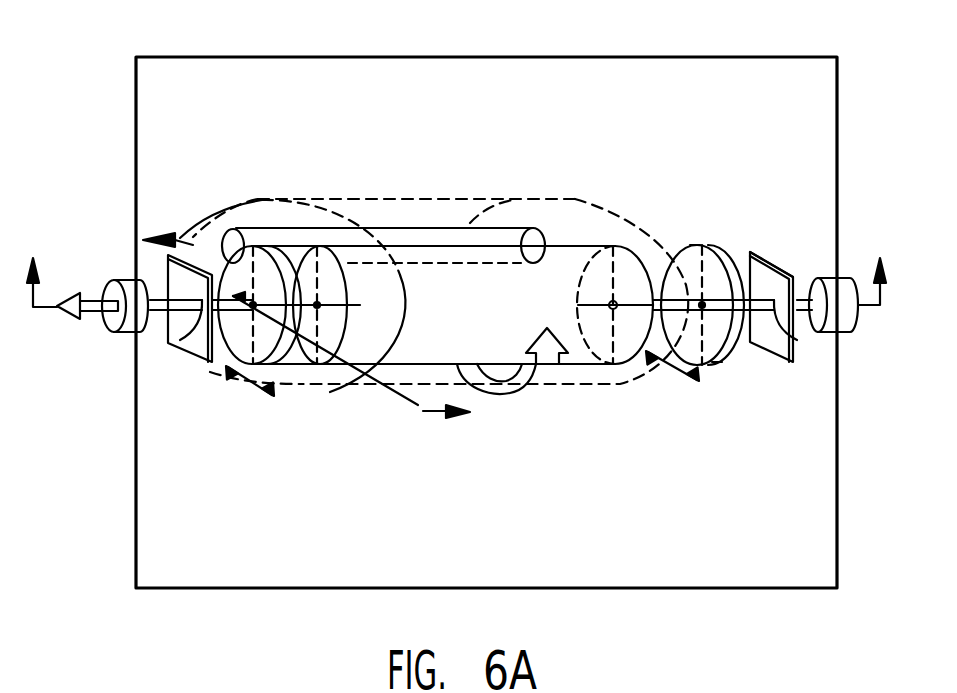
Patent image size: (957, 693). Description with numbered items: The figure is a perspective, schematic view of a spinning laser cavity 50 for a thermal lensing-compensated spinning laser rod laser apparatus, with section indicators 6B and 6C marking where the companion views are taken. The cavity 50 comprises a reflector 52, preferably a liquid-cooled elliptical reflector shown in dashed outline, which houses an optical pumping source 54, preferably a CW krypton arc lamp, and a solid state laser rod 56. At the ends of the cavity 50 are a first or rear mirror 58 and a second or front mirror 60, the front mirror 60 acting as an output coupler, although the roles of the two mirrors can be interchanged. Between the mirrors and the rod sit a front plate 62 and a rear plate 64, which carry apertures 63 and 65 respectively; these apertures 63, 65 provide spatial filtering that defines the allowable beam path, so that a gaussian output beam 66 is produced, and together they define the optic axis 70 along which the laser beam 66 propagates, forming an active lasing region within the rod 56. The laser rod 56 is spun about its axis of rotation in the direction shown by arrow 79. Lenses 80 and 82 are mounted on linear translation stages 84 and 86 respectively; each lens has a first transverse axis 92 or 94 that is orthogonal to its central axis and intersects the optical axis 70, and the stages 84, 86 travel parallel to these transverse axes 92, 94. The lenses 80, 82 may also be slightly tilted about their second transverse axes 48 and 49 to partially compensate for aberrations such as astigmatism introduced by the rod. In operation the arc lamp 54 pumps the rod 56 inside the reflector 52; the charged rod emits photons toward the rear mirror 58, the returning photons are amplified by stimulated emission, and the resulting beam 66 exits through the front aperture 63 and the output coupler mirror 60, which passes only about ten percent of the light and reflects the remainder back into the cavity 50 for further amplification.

The spinning laser cavity 50 is at (488, 57).
The reflector 52 is at (343, 199).
The optical pumping source 54 is at (427, 228).
The laser rod 56 is at (580, 244).
The rear mirror 58 is at (814, 278).
The front mirror 60 is at (147, 279).
The front plate 62 is at (214, 362).
The front aperture 63 is at (190, 349).
The rear plate 64 is at (750, 252).
The rear aperture 65 is at (800, 348).
The laser beam 66 is at (72, 313).
The optic axis 70 is at (352, 310).
The arrow 79 is at (563, 373).
The lens 80 is at (286, 366).
The lens 82 is at (733, 357).
The linear translation stage 84 is at (263, 396).
The linear translation stage 86 is at (688, 376).
The first transverse axis 92 is at (225, 238).
The first transverse axis 94 is at (683, 243).
The second transverse axis 48 is at (278, 366).
The second transverse axis 49 is at (720, 360).
The section line 6B is at (306, 326).
The section line 6C is at (459, 264).